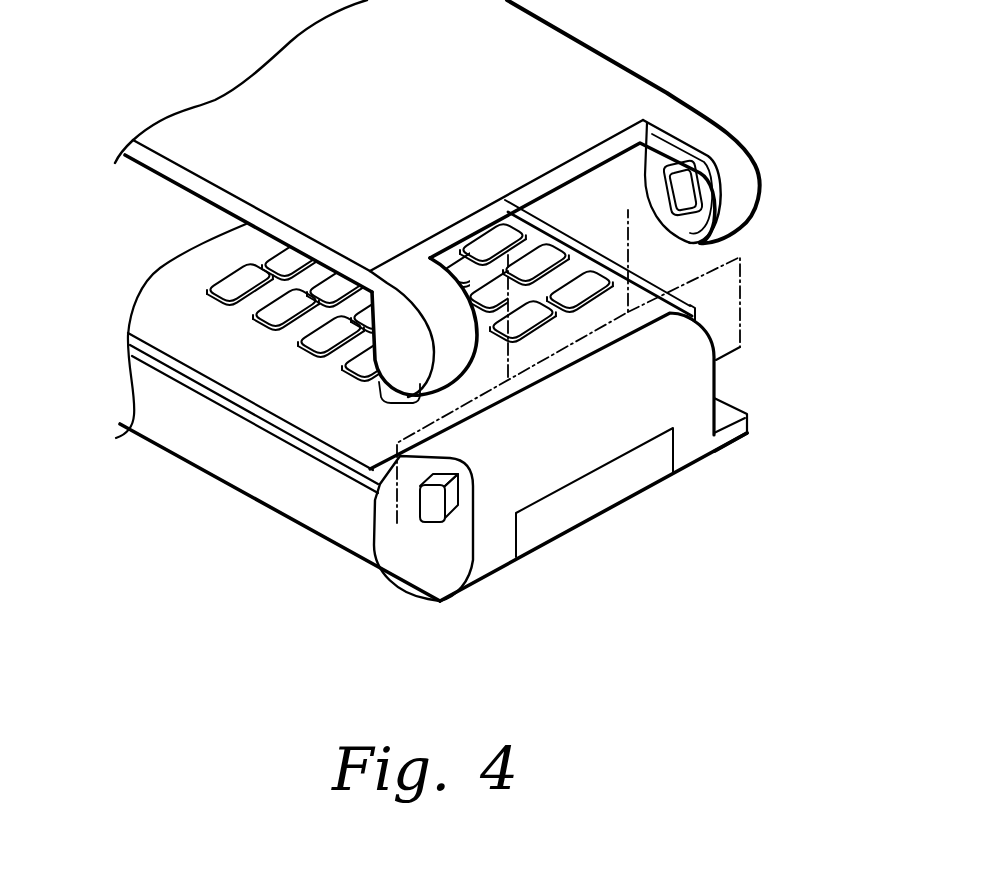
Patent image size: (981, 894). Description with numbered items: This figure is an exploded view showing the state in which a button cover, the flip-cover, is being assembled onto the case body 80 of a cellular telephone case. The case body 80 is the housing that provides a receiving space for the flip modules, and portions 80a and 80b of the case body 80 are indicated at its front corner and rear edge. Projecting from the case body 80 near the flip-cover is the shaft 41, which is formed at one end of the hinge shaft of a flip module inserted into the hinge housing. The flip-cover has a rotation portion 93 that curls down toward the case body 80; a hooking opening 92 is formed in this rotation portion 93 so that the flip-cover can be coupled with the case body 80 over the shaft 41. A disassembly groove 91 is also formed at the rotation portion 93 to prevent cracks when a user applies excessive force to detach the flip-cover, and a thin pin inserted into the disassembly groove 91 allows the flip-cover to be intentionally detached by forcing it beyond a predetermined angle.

The case body 80 is at (97, 347).
The boss on body 80a is at (443, 563).
The projection of body 80b is at (727, 417).
The shaft 41 is at (420, 522).
The disassembly groove 91 is at (700, 243).
The hooking opening 92 is at (690, 187).
The rotation portion 93 is at (403, 352).